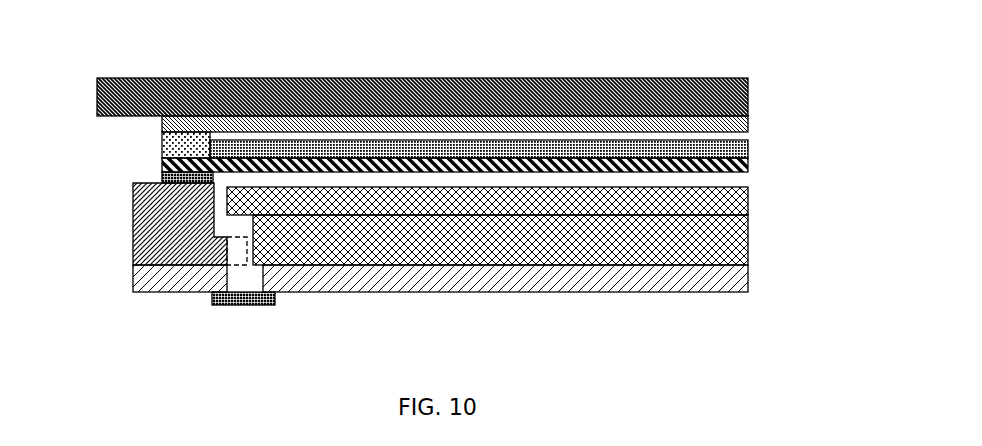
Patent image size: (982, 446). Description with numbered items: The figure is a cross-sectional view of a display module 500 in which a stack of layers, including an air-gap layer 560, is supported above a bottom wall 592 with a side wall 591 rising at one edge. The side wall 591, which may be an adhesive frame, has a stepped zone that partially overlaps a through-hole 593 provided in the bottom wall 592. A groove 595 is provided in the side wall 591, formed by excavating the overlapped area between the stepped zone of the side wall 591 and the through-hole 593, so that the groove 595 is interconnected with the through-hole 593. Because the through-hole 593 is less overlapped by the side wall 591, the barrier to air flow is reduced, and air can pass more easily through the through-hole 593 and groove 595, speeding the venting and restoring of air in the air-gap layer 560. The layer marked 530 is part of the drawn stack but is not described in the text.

The display module 500 is at (759, 66).
The air-gap layer 560 is at (737, 178).
The groove 595 is at (133, 206).
The display panel layer 530 is at (750, 242).
The side wall 591 is at (133, 250).
The bottom wall 592 is at (478, 278).
The through-hole 593 is at (275, 294).